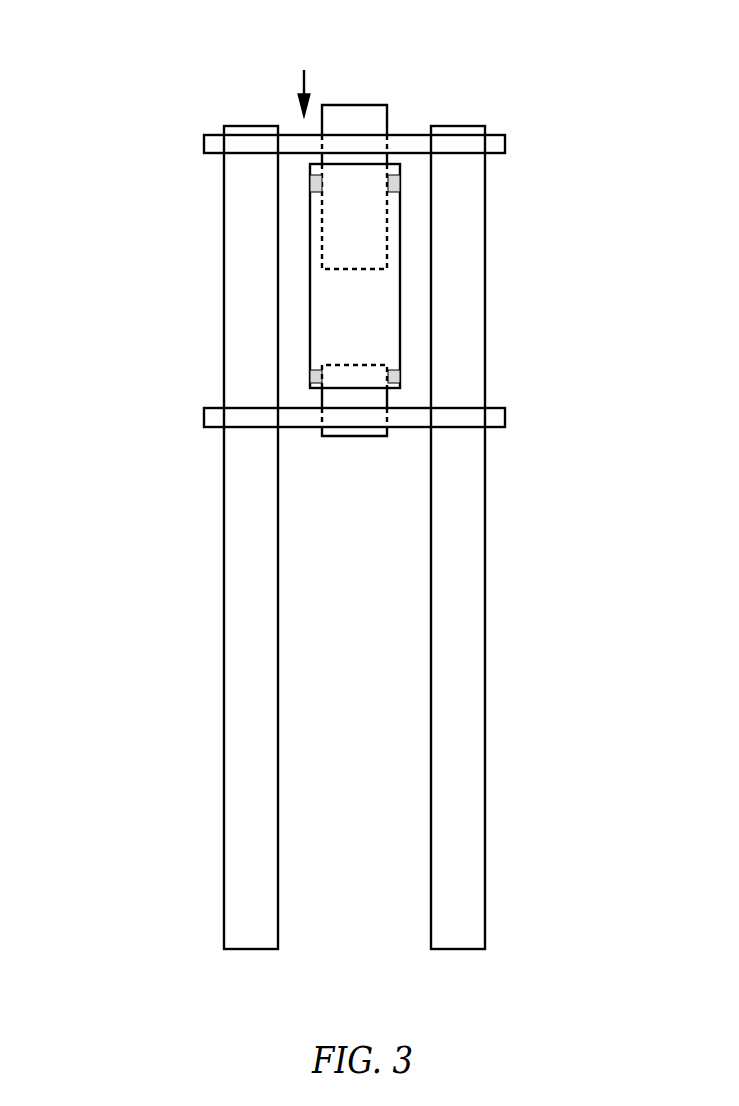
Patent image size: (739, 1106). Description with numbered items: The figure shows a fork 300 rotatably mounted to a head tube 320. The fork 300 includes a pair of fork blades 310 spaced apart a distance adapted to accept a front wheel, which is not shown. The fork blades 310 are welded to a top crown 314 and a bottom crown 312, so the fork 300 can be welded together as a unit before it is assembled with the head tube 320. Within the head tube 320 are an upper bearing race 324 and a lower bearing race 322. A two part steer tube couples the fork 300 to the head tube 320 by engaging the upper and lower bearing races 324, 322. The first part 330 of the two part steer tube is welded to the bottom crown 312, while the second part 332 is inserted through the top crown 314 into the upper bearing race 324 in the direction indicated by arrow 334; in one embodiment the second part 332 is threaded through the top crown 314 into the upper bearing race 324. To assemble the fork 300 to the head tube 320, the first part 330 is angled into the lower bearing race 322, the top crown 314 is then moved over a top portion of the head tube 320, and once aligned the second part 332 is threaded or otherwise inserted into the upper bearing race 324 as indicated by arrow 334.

The fork 300 is at (146, 684).
The fork blades 310 is at (459, 625).
The bottom crown 312 is at (502, 418).
The top crown 314 is at (495, 143).
The head tube 320 is at (390, 318).
The lower bearing race 322 is at (312, 377).
The upper bearing race 324 is at (315, 182).
The first part of the two part steer tube 330 is at (376, 399).
The second part of the two part steer tube 332 is at (351, 117).
The arrow 334 is at (302, 82).